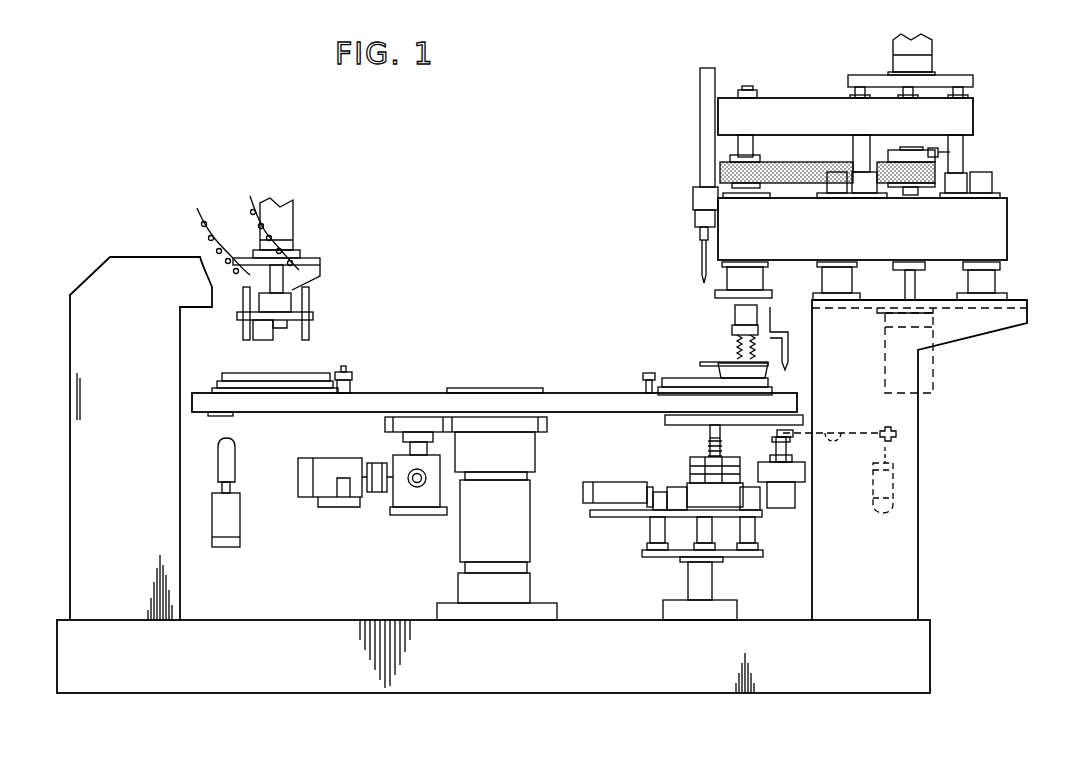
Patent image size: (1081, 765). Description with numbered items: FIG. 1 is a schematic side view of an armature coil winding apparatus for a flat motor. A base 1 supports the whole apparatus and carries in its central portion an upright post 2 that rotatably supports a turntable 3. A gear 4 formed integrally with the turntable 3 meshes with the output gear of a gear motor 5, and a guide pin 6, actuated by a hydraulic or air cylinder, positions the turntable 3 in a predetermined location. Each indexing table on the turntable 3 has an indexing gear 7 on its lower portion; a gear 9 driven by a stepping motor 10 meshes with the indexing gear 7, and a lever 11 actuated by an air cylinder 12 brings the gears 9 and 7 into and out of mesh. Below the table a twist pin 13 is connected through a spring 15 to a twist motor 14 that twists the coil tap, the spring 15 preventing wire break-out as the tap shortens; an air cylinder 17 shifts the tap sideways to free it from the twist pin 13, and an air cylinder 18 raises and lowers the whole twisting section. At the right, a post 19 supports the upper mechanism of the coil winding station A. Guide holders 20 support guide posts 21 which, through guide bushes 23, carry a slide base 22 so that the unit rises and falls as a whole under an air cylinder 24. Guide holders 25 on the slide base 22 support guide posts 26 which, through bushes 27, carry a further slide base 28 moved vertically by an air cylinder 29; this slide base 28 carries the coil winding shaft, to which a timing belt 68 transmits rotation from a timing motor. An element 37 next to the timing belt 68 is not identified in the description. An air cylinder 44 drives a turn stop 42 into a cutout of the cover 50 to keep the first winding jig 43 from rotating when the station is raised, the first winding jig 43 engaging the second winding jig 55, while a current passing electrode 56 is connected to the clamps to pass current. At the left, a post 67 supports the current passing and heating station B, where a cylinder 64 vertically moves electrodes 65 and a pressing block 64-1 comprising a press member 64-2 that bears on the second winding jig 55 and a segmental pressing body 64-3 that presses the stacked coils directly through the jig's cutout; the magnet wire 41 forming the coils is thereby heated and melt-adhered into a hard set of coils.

The base 1 is at (931, 670).
The post 2 is at (458, 540).
The turntable 3 is at (424, 392).
The gear 4 is at (548, 428).
The gear motor 5 is at (331, 461).
The guide pin 6 is at (235, 460).
The indexing gear 7 is at (665, 421).
The gear 9 is at (794, 432).
The stepping motor 10 is at (780, 508).
The lever 11 is at (852, 433).
The air cylinder 12 is at (872, 484).
The twist pin 13 is at (708, 444).
The twist motor 14 is at (690, 478).
The spring 15 is at (721, 447).
The air cylinder 17 is at (583, 494).
The air cylinder 18 is at (711, 592).
The post 19 is at (918, 563).
The guide holders 20 is at (998, 288).
The guide posts 21 is at (994, 193).
The slide base 22 is at (1007, 232).
The guide bushes 23 is at (1005, 267).
The air cylinder 24 is at (928, 380).
The guide holders 25 is at (988, 178).
The guide posts 26 is at (960, 155).
The bushes 27 is at (973, 136).
The slide base 28 is at (973, 112).
The air cylinder 29 is at (934, 74).
The plate 37 is at (765, 163).
The magnet wire 41 is at (755, 92).
The turn stop 42 is at (703, 262).
The first winding jig 43 is at (718, 372).
The air cylinder 44 is at (705, 155).
The cover 50 is at (725, 363).
The second winding jig 55 is at (667, 375).
The current passing electrode 56 is at (645, 374).
The cylinder 64 is at (287, 202).
The pressing block 64-1 is at (282, 368).
The press member 64-2 is at (313, 319).
The segmental pressing body 64-3 is at (259, 351).
The electrode 65 is at (243, 331).
The post 67 is at (144, 268).
The timing belt 68 is at (807, 168).
The coil winding station A is at (673, 227).
The current passing and heating station B is at (314, 293).